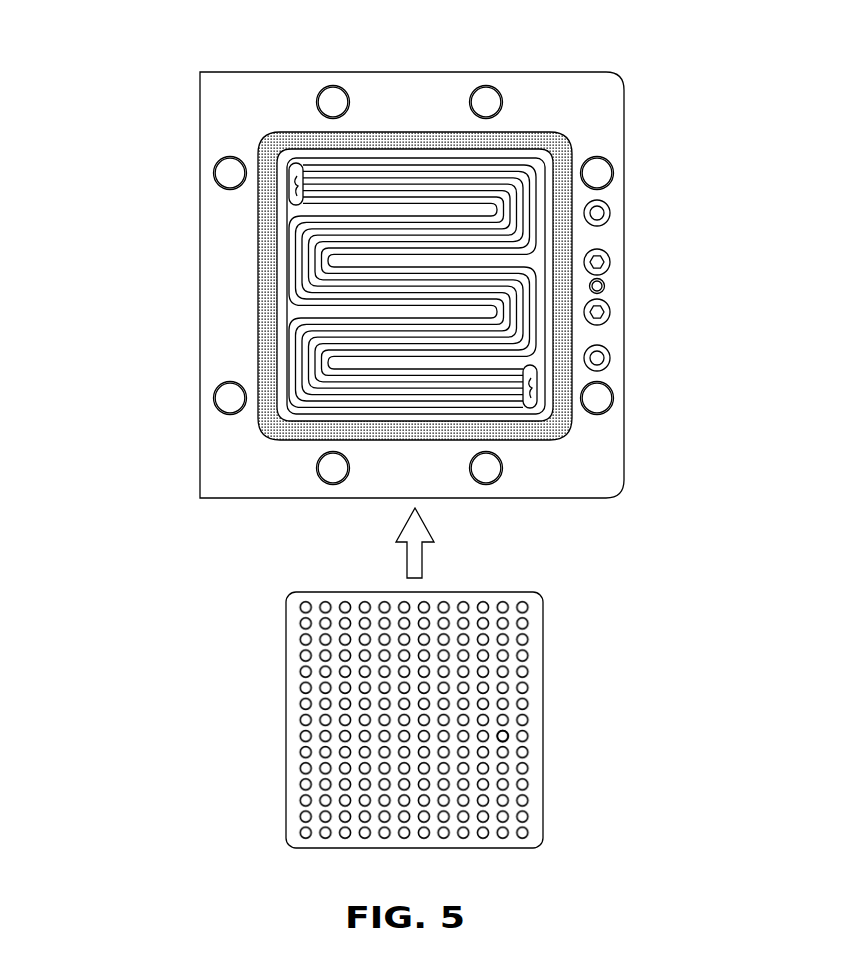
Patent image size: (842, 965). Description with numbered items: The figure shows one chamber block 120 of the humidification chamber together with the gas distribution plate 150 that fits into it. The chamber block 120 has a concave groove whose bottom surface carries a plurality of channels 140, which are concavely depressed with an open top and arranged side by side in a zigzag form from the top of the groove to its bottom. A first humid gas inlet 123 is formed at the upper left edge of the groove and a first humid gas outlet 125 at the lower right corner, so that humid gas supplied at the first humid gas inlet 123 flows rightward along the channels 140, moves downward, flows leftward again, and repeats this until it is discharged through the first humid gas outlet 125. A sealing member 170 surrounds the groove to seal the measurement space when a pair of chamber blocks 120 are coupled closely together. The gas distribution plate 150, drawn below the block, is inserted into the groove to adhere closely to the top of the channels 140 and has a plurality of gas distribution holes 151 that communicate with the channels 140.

The chamber block 120 is at (270, 98).
The first humid gas inlet 123 is at (297, 184).
The first humid gas outlet 125 is at (531, 384).
The channels 140 is at (404, 183).
The sealing member 170 is at (272, 430).
The gas distribution plate 150 is at (533, 673).
The gas distribution holes 151 is at (504, 735).